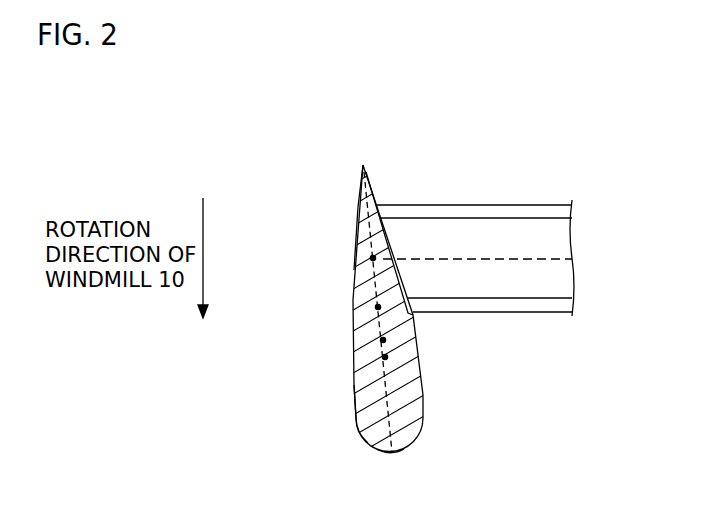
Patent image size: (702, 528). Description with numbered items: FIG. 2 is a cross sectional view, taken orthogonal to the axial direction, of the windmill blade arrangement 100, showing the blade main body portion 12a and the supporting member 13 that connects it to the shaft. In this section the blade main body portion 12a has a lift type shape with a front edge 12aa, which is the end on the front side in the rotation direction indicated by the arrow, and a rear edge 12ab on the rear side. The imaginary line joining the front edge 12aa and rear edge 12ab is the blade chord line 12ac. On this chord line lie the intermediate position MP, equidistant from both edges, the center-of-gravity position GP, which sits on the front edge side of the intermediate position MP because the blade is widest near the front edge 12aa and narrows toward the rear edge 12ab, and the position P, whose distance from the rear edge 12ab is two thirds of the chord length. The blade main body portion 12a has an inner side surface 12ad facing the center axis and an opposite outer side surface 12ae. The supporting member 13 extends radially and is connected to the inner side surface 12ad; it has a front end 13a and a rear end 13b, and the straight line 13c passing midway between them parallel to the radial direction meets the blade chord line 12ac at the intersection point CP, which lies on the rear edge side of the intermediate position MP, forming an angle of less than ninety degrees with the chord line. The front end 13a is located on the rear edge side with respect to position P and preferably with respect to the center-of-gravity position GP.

The windmill blade 100 is at (577, 96).
The blade main body portion 12a is at (355, 265).
The front edge 12aa is at (392, 452).
The rear edge 12ab is at (363, 165).
The blade chord line 12ac is at (359, 213).
The inner side surface 12ad is at (377, 193).
The outer side surface 12ae is at (363, 440).
The supporting member 13 is at (538, 230).
The front end 13a is at (477, 312).
The rear end 13b is at (455, 205).
The straight line 13c is at (508, 259).
The intersection point CP is at (373, 258).
The intermediate position MP is at (378, 307).
The center-of-gravity position GP is at (383, 340).
The position P is at (385, 357).